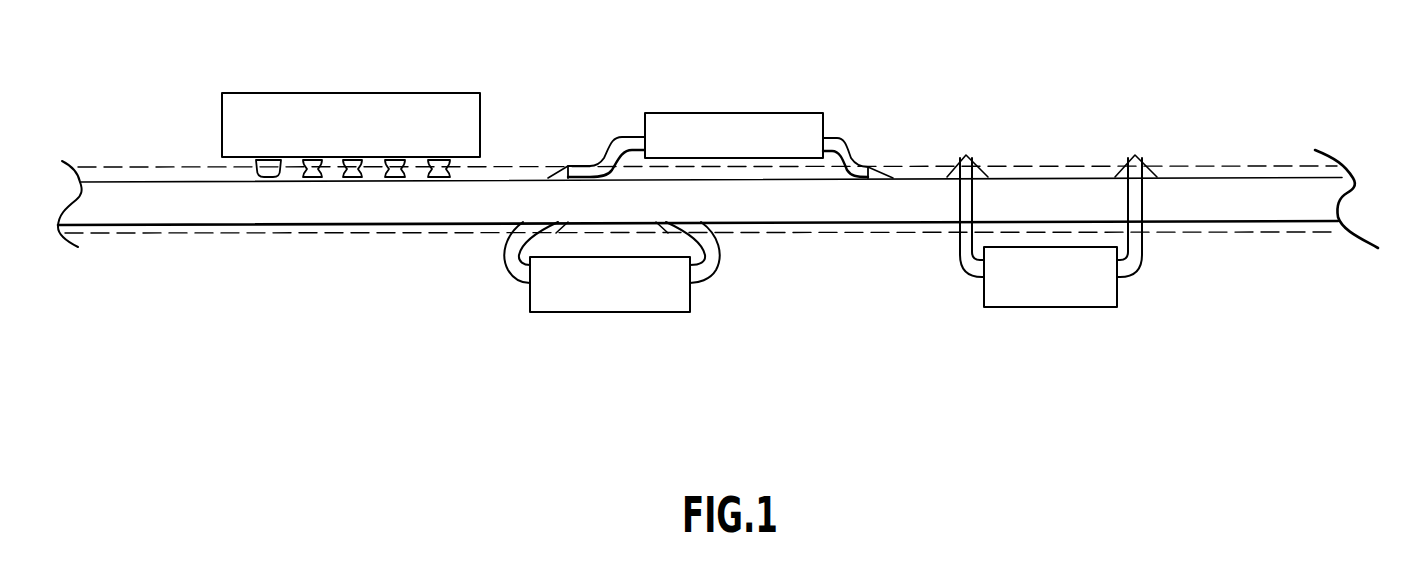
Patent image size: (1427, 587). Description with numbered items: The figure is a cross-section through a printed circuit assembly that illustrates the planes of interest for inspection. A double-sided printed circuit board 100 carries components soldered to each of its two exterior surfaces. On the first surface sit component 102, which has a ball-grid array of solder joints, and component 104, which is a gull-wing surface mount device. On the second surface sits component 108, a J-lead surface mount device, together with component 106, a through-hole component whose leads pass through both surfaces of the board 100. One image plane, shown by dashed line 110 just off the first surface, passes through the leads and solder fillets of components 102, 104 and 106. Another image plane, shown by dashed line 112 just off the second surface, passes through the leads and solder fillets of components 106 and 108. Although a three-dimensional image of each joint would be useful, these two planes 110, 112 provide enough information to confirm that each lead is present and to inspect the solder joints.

The double-sided printed circuit board 100 is at (1362, 192).
The component 102 is at (327, 93).
The component 104 is at (737, 113).
The through-hole component 106 is at (1050, 307).
The component 108 is at (610, 313).
The dashed line 110 is at (1238, 167).
The dashed line 112 is at (1237, 232).